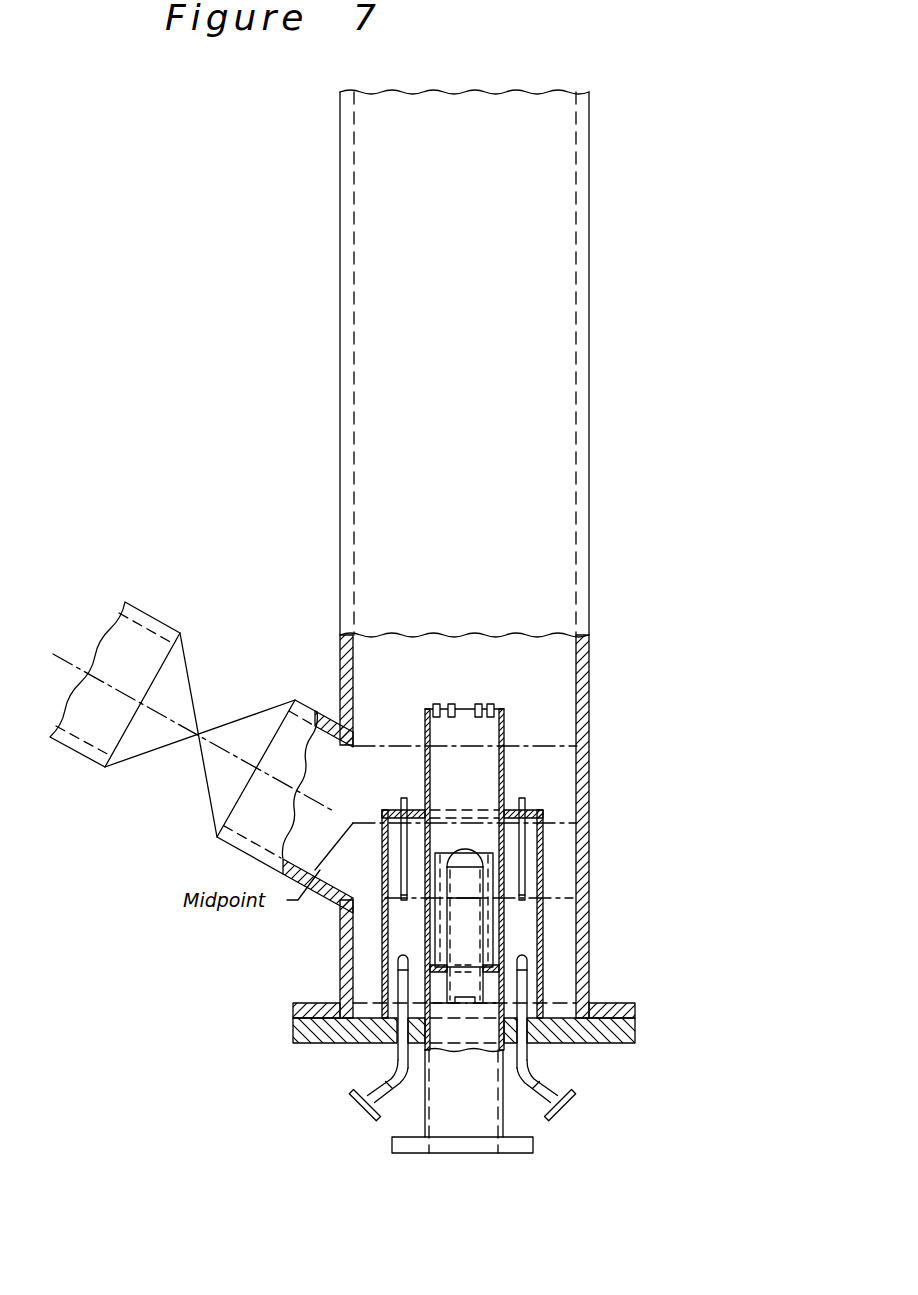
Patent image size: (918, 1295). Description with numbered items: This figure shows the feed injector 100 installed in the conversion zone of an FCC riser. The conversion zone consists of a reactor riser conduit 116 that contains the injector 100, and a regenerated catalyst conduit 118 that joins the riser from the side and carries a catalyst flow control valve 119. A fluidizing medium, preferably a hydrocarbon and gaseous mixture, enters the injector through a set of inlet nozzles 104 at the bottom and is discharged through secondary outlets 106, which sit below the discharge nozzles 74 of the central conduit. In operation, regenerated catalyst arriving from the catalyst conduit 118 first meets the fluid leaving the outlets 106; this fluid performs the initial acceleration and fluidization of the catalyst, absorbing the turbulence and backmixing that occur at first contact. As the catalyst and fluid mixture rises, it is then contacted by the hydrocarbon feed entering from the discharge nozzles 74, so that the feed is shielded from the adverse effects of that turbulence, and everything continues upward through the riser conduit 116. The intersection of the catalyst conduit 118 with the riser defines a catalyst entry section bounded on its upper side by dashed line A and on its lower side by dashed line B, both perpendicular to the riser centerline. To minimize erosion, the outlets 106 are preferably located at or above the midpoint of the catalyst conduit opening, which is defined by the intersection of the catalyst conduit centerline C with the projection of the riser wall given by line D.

The discharge nozzles 74 is at (477, 709).
The injector 100 is at (545, 944).
The inlet nozzles 104 is at (387, 1080).
The secondary outlets 106 is at (402, 797).
The reactor riser conduit 116 is at (590, 308).
The regenerated catalyst conduit 118 is at (333, 718).
The catalyst flow control valve 119 is at (205, 782).
The dashed line A is at (520, 745).
The dashed line B is at (565, 823).
The catalyst conduit centerline C is at (310, 797).
The projection of riser wall D is at (550, 898).